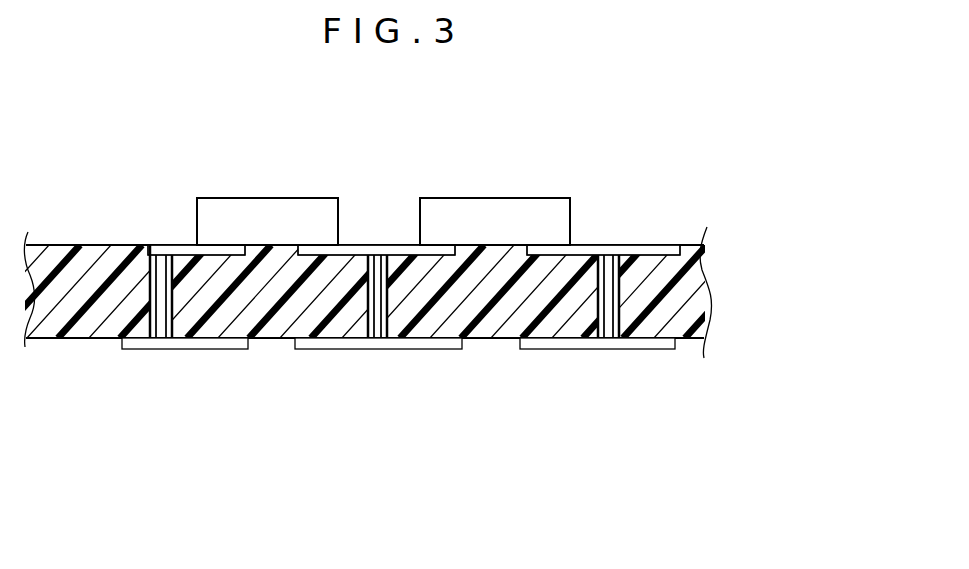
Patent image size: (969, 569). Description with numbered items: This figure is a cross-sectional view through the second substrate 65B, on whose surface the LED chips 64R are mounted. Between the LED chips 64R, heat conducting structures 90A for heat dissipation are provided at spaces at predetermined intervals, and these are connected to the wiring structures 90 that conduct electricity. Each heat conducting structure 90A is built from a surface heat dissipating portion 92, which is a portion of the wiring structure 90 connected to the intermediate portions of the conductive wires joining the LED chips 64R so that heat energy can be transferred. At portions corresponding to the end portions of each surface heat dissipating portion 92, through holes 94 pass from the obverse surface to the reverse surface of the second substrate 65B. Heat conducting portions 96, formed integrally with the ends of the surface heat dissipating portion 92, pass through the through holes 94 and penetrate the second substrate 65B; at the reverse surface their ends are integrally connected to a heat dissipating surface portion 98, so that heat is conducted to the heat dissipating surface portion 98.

The second substrate 65B is at (84, 262).
The LED chip 64R is at (272, 210).
The wiring structure 90 is at (192, 246).
The heat conducting structure 90A is at (208, 443).
The surface heat dissipating portion 92 is at (165, 250).
The through hole 94 is at (148, 288).
The heat conducting portion 96 is at (158, 308).
The heat dissipating surface portion 98 is at (165, 343).